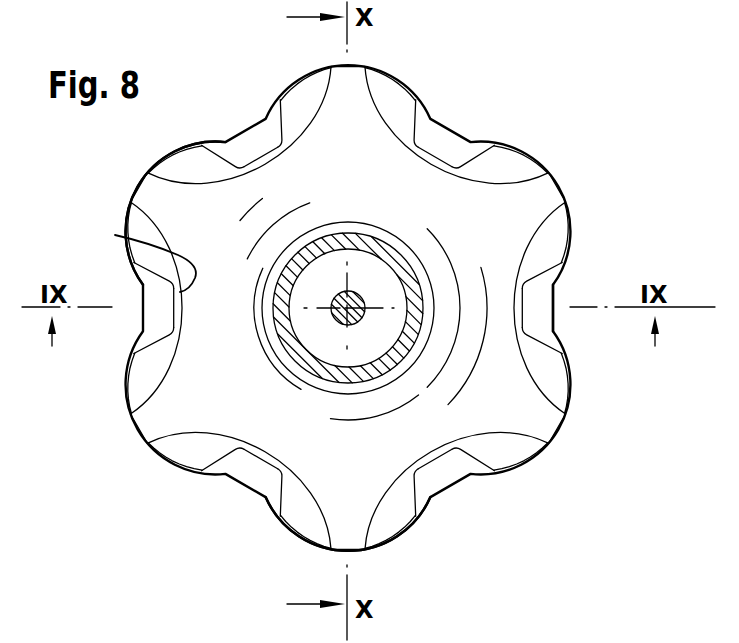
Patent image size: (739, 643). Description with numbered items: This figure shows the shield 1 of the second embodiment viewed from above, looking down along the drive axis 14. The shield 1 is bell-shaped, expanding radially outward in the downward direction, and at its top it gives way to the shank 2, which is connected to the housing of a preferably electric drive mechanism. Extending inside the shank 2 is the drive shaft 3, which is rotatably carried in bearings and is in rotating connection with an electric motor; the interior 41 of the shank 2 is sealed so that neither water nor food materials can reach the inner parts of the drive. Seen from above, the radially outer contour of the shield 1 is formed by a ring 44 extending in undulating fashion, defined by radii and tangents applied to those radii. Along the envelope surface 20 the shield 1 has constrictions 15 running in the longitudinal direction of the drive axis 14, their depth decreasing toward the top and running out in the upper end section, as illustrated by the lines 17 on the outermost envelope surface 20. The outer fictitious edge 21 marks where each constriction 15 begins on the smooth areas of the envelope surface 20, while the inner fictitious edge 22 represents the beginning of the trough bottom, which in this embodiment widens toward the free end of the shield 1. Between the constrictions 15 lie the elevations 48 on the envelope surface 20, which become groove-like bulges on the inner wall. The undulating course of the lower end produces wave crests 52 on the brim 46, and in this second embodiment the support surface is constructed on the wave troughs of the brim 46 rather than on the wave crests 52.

The shield 1 is at (514, 134).
The shank 2 is at (282, 353).
The drive shaft 3 is at (359, 293).
The drive axis 14 is at (332, 302).
The constrictions 15 is at (574, 322).
The lines 17 is at (115, 235).
The envelope surface 20 is at (407, 81).
The outer fictitious edge 21 is at (578, 220).
The inner fictitious edge 22 is at (572, 247).
The interior of the shank 41 is at (336, 262).
The ring 44 is at (270, 104).
The brim 46 is at (410, 545).
The elevations 48 is at (158, 410).
The wave crests 52 is at (354, 64).